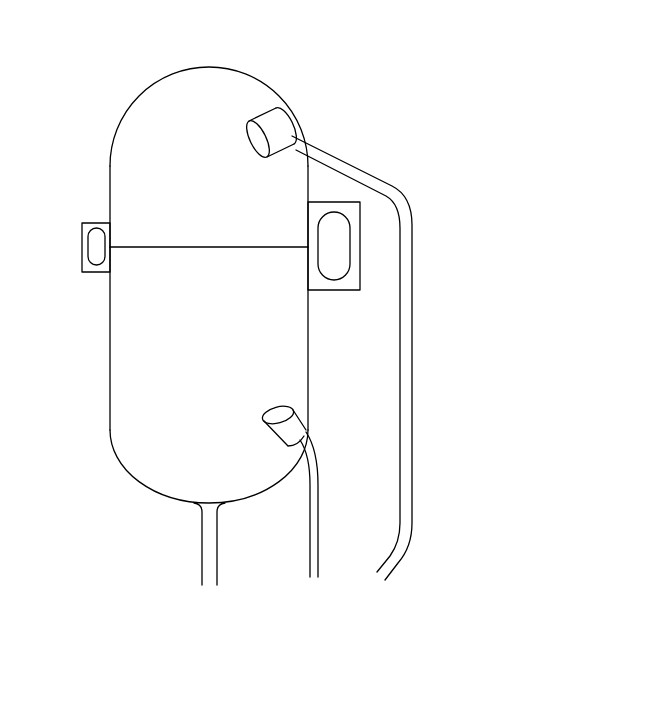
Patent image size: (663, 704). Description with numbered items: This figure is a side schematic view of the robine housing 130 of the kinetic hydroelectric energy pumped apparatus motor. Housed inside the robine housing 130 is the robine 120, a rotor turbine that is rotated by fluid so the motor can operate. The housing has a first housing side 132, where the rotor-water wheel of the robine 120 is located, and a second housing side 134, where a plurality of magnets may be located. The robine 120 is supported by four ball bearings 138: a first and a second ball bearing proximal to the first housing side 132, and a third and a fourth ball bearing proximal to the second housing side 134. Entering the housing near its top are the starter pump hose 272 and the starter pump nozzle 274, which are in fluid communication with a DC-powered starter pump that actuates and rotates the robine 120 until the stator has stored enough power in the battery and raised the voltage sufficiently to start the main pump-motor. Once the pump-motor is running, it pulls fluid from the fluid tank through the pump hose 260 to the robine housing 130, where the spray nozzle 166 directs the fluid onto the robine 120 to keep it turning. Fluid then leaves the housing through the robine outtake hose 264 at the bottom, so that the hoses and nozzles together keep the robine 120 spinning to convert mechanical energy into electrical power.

The robine 120 is at (239, 301).
The robine housing 130 is at (291, 51).
The first housing side 132 is at (128, 140).
The second housing side 134 is at (115, 433).
The ball bearings 138 is at (92, 247).
The starter pump nozzle 274 is at (290, 127).
The starter pump hose 272 is at (392, 192).
The spray nozzle 166 is at (277, 410).
The pump hose 260 is at (318, 497).
The robine outtake hose 264 is at (212, 552).